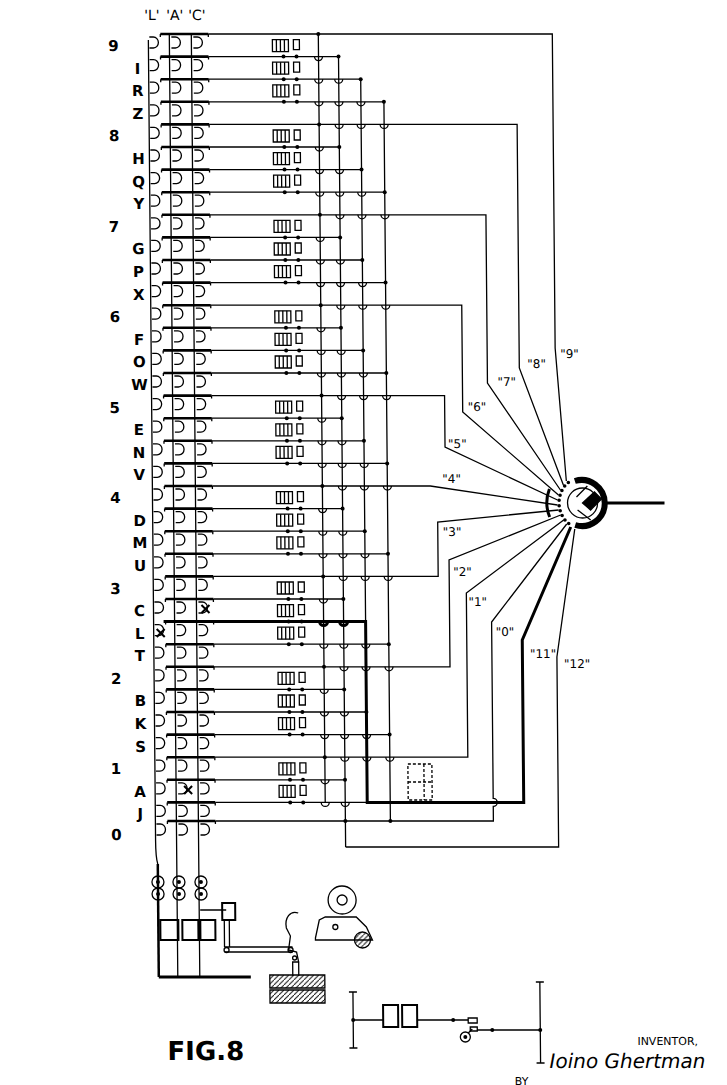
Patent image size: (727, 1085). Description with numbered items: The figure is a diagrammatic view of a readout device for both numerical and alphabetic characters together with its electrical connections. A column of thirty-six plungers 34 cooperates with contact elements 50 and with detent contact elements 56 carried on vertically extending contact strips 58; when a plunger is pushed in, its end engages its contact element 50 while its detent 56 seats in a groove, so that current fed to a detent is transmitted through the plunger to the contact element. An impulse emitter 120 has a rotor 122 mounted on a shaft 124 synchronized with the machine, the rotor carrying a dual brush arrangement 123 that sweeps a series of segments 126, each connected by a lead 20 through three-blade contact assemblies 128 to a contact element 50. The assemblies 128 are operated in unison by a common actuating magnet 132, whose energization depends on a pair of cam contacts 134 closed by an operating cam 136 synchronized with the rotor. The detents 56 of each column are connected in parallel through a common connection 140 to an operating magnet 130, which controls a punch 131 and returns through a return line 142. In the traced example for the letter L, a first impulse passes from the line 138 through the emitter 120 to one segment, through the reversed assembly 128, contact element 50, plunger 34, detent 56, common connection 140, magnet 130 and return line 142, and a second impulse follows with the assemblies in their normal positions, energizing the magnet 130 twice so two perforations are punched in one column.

The contact elements 50 is at (206, 38).
The matrix wiring 20 is at (256, 396).
The three-blade contact assemblies 128 is at (266, 182).
The common connection 140 is at (148, 623).
The plungers 34 is at (150, 634).
The actuating magnet 132 is at (425, 781).
The cam contacts 134 is at (469, 1019).
The operating cam 136 is at (453, 1040).
The detent contact elements 56 is at (150, 848).
The contact strips 58 is at (149, 868).
The operating magnets 130 is at (154, 935).
The return line 142 is at (183, 978).
The punch 131 is at (288, 968).
The impulse emitter 120 is at (600, 469).
The segments 126 is at (568, 476).
The shaft 124 is at (585, 537).
The rotor 122 is at (604, 492).
The dual brush arrangement 123 is at (535, 492).
The line 138 is at (633, 507).